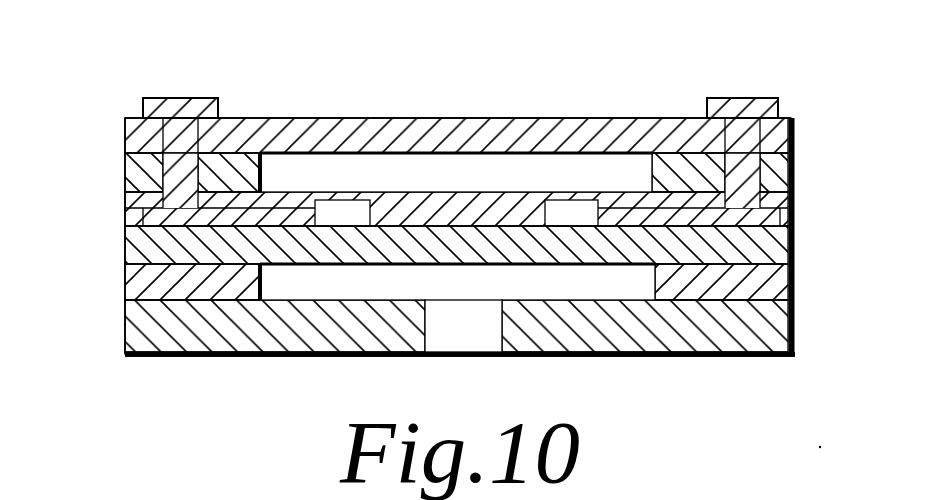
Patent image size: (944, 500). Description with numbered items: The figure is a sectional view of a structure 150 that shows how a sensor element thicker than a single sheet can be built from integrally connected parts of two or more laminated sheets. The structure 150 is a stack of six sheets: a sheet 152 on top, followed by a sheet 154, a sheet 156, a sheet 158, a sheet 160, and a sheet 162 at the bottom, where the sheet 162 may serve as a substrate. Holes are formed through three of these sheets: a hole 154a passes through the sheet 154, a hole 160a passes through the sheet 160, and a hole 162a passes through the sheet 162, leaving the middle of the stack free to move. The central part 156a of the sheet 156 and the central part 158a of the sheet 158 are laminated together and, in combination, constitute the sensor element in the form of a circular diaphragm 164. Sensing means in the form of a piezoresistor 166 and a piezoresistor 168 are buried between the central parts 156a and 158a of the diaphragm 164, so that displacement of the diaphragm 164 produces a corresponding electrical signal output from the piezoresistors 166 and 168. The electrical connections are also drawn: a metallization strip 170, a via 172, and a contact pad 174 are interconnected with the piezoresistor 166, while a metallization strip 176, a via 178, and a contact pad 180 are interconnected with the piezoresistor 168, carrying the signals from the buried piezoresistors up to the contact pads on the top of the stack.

The structure 150 is at (99, 81).
The sheet 152 is at (125, 143).
The sheet 154 is at (125, 181).
The hole 154a is at (263, 168).
The sheet 156 is at (125, 205).
The central part 156a is at (525, 200).
The sheet 158 is at (125, 248).
The central part 158a is at (525, 243).
The sheet 160 is at (125, 283).
The hole 160a is at (265, 284).
The sheet 162 is at (125, 335).
The hole 162a is at (503, 326).
The circular diaphragm 164 is at (450, 176).
The piezoresistor 166 is at (350, 210).
The piezoresistor 168 is at (583, 213).
The metallization strip 170 is at (205, 228).
The via 172 is at (238, 160).
The contact pad 174 is at (177, 98).
The metallization strip 176 is at (745, 217).
The via 178 is at (763, 176).
The contact pad 180 is at (725, 98).